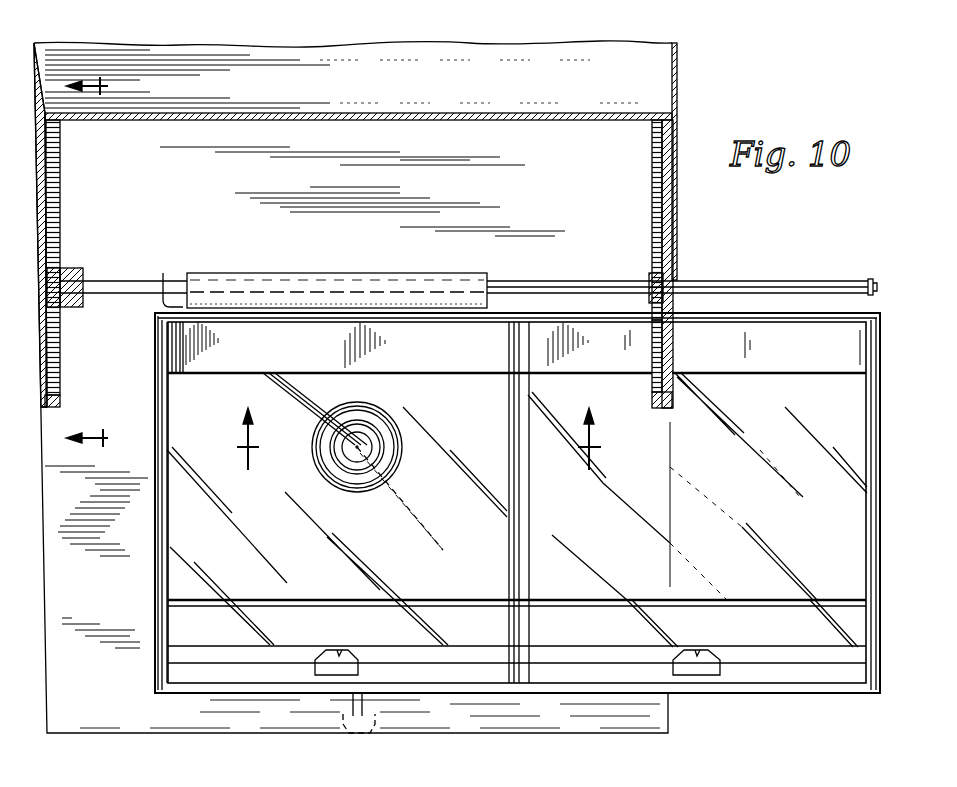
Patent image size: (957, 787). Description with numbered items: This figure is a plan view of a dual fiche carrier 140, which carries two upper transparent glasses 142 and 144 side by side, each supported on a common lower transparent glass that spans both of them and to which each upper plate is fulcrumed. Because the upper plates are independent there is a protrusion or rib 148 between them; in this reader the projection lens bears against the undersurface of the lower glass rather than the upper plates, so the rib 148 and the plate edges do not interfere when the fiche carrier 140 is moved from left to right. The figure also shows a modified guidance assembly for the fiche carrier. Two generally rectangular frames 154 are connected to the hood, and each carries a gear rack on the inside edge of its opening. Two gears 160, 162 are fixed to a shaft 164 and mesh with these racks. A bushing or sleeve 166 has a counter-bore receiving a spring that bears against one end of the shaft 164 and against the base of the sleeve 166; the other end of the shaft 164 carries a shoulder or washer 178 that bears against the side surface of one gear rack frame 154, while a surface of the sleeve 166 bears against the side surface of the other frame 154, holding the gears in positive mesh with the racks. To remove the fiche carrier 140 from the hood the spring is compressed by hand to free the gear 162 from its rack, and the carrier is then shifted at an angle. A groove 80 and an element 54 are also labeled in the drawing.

The guide track 54 is at (675, 345).
The annular groove 80 is at (345, 740).
The dual fiche carrier 140 is at (447, 368).
The upper transparent glass 142 is at (284, 373).
The upper transparent glass 144 is at (800, 395).
The rib 148 is at (517, 537).
The rectangular frame 154 is at (62, 403).
The gear 160 is at (62, 268).
The gear 162 is at (668, 272).
The shaft 164 is at (137, 281).
The sleeve 166 is at (72, 303).
The washer 178 is at (650, 278).